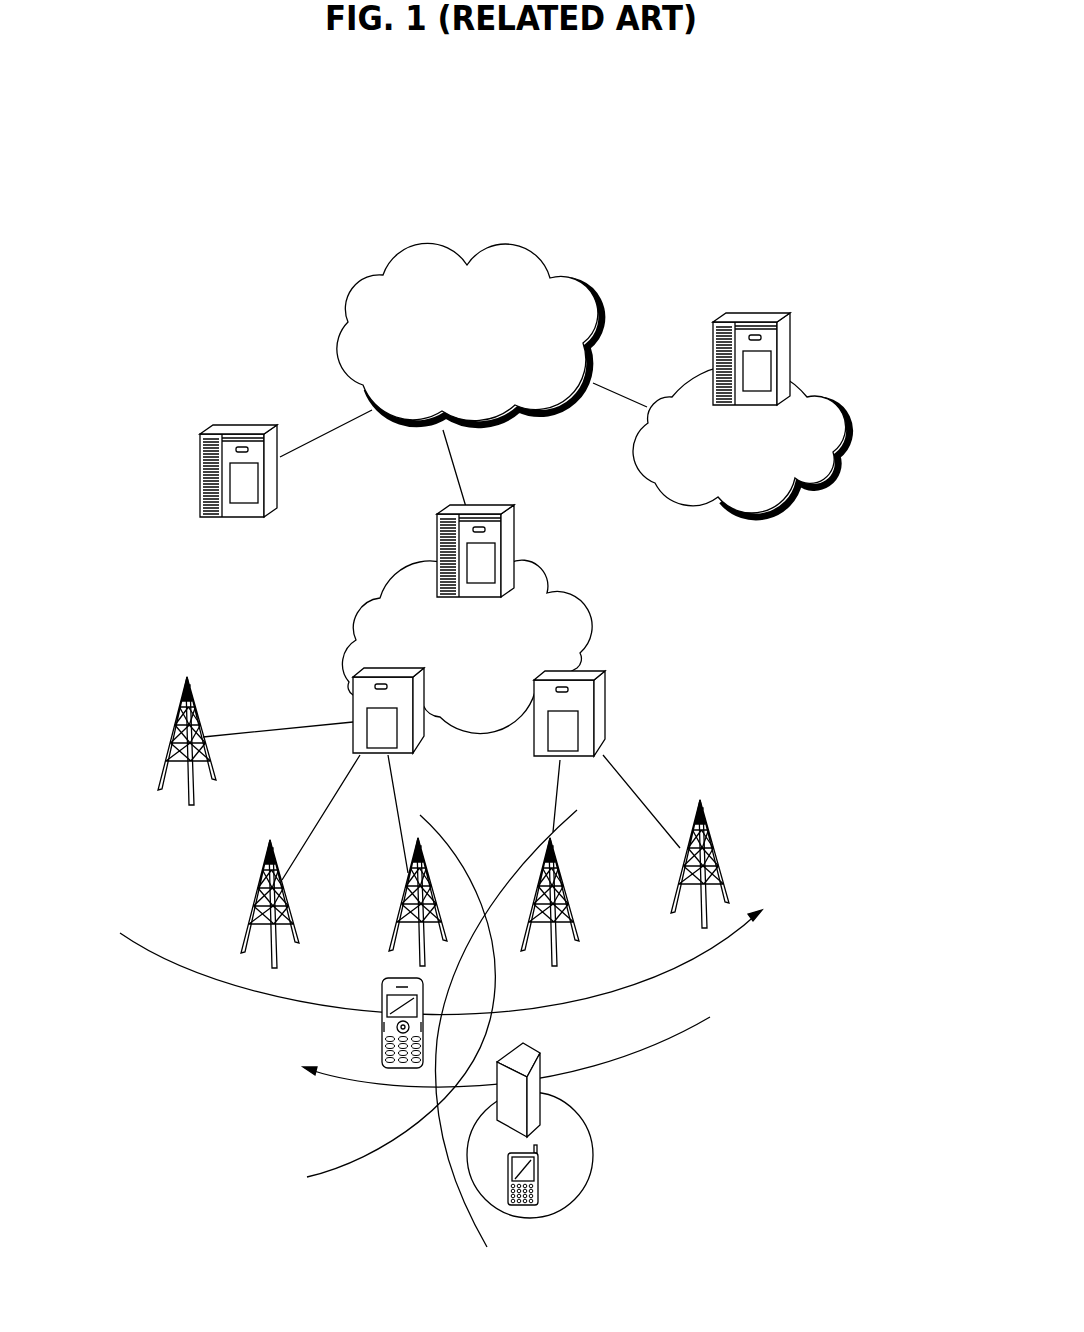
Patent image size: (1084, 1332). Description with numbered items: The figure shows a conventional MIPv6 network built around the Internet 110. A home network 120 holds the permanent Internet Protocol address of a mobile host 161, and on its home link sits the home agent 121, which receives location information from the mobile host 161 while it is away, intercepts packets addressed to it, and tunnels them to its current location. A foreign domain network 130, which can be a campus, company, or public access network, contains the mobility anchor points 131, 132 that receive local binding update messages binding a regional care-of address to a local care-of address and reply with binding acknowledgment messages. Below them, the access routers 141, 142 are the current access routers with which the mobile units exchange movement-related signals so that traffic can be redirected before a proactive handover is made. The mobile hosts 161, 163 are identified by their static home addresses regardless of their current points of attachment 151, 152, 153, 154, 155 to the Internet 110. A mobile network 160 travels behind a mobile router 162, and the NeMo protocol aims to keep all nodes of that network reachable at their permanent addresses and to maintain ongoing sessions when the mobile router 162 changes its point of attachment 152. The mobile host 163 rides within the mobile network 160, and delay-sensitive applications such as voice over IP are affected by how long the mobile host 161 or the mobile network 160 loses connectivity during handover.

The Internet 110 is at (450, 238).
The home network 120 is at (852, 430).
The home agent 121 is at (790, 340).
The foreign domain network 130 is at (597, 623).
The mobility anchor point 131 is at (515, 540).
The mobility anchor point 132 is at (277, 470).
The access router 141 is at (605, 712).
The access router 142 is at (424, 745).
The point of attachment 151 is at (717, 852).
The point of attachment 152 is at (560, 872).
The point of attachment 153 is at (408, 902).
The point of attachment 154 is at (258, 900).
The point of attachment 155 is at (175, 733).
The mobile network 160 is at (441, 1028).
The mobile host 161 is at (381, 1038).
The mobile router 162 is at (530, 1063).
The mobile host 163 is at (543, 1187).